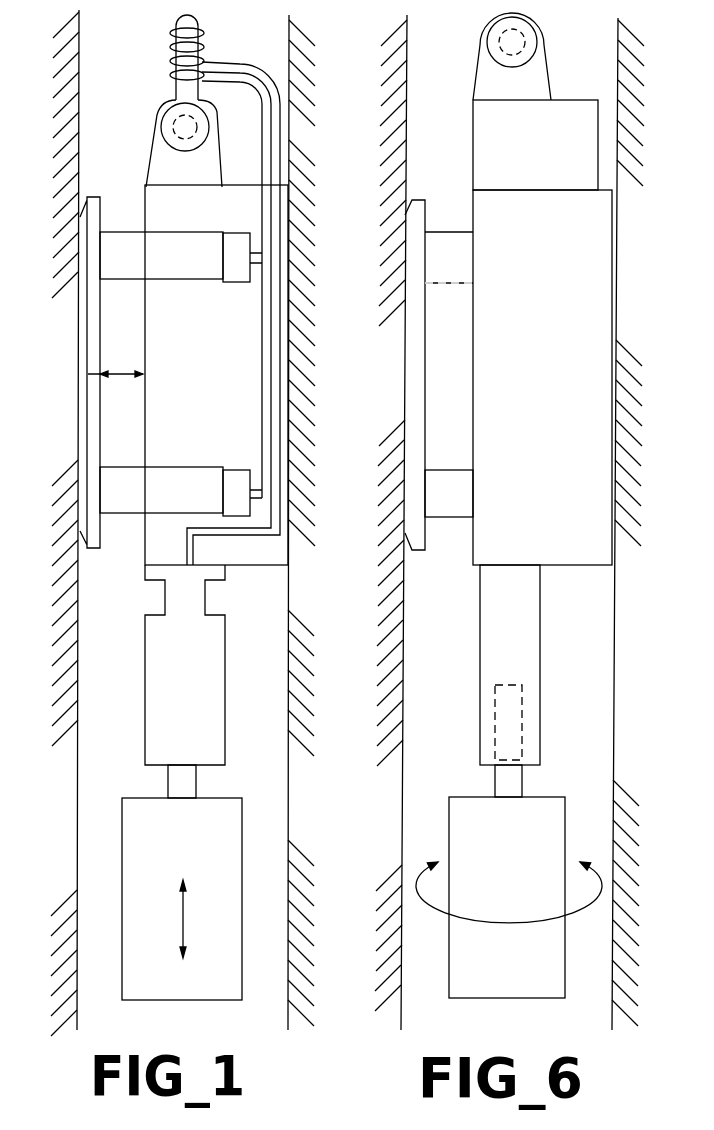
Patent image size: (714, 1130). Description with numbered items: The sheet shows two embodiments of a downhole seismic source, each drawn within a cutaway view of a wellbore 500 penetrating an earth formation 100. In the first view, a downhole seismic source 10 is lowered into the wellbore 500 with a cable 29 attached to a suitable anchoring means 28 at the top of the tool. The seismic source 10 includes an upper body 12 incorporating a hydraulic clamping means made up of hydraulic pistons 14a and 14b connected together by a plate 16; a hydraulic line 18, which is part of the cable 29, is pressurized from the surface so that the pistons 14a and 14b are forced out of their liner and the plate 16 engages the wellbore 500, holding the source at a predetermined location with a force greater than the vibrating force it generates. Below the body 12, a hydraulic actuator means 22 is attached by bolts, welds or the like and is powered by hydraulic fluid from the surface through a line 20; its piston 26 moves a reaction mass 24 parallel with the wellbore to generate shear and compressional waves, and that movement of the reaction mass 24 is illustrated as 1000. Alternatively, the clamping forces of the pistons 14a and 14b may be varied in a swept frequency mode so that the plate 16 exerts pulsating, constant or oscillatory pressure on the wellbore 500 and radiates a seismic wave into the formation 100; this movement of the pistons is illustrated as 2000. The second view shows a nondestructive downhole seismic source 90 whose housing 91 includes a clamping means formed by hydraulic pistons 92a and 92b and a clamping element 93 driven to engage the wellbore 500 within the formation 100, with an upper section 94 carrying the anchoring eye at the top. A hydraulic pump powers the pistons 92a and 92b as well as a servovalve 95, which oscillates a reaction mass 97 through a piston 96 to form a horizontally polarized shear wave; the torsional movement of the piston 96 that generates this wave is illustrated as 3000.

In FIG. 1, the downhole seismic source 10 is at (50, 86).
In FIG. 1, the earth formation 100 is at (48, 150).
In FIG. 6, the earth formation 100 is at (690, 151).
In FIG. 1, the wellbore 500 is at (289, 778).
In FIG. 6, the wellbore 500 is at (613, 727).
In FIG. 1, the upper body 12 is at (217, 352).
In FIG. 1, the hydraulic piston 14a is at (190, 268).
In FIG. 1, the hydraulic piston 14b is at (190, 504).
In FIG. 1, the plate 16 is at (86, 323).
In FIG. 1, the hydraulic line 18 is at (263, 113).
In FIG. 1, the line 20 is at (278, 112).
In FIG. 1, the hydraulic actuator means 22 is at (203, 696).
In FIG. 1, the reaction mass 24 is at (205, 855).
In FIG. 1, the piston 26 is at (197, 783).
In FIG. 1, the anchoring means 28 is at (163, 145).
In FIG. 1, the cable 29 is at (194, 24).
In FIG. 1, the movement of the reaction mass 1000 is at (163, 935).
In FIG. 1, the movement of the pistons 2000 is at (117, 377).
In FIG. 6, the nondestructive downhole seismic source 90 is at (582, 48).
In FIG. 6, the housing 91 is at (565, 368).
In FIG. 6, the hydraulic piston 92a is at (447, 232).
In FIG. 6, the hydraulic piston 92b is at (446, 520).
In FIG. 6, the clamping means 93 is at (415, 352).
In FIG. 6, the upper housing section 94 is at (558, 162).
In FIG. 6, the servovalve 95 is at (541, 627).
In FIG. 6, the piston 96 is at (523, 786).
In FIG. 6, the reaction mass 97 is at (535, 843).
In FIG. 6, the torsional movement of the piston 3000 is at (509, 907).